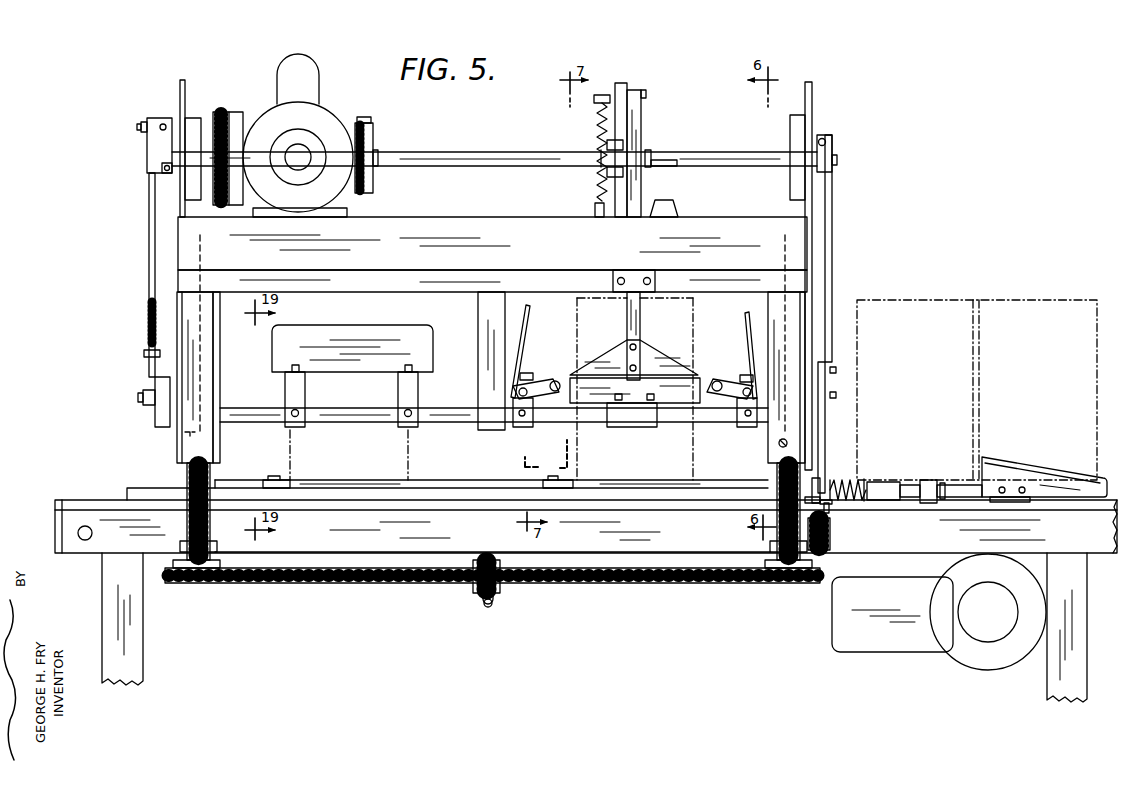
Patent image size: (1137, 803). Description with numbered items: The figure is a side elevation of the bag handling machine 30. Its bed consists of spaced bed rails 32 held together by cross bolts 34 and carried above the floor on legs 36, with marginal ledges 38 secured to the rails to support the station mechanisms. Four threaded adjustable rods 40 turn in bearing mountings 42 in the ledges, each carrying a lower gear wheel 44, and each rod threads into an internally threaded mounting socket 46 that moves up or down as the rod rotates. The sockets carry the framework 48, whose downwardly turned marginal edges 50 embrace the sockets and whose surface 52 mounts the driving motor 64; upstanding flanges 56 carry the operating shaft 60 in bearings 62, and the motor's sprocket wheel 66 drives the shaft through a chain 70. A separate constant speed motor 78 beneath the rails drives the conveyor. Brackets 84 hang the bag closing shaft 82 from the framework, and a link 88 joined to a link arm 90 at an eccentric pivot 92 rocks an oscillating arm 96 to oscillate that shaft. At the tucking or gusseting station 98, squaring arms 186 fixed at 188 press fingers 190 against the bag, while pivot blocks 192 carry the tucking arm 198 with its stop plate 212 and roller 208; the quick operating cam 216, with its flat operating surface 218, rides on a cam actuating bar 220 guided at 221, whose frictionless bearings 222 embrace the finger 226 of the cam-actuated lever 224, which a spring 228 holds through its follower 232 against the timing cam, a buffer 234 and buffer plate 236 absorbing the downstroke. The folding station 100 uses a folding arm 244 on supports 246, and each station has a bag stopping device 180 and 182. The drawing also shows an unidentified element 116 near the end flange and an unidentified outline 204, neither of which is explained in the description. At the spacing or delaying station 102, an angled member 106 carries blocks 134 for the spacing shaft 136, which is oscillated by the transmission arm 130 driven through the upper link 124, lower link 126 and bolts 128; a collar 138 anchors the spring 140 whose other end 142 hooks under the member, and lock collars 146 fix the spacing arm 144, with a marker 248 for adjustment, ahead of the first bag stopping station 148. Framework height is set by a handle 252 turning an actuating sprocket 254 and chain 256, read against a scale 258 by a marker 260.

The bag handling machine 30 is at (386, 594).
The bed rails 32 is at (62, 530).
The cross bolts 34 is at (86, 541).
The legs 36 is at (140, 636).
The marginal ledges 38 is at (464, 553).
The adjustable rods 40 is at (186, 473).
The bearing mountings 42 is at (214, 544).
The sprocket or gear wheel 44 is at (193, 578).
The mounting socket 46 is at (216, 376).
The framework 48 is at (487, 210).
The downwardly turned marginal edges 50 is at (398, 225).
The surface 52 is at (438, 218).
The upstanding flanges 56 is at (185, 80).
The operating shaft 60 is at (440, 152).
The bearings 62 is at (194, 118).
The driving motor 64 is at (325, 124).
The sprocket wheel or gear 66 is at (376, 140).
The sprocket or chain 70 is at (364, 124).
The constant speed motor 78 is at (976, 643).
The bag closing shaft 82 is at (260, 418).
The brackets 84 is at (202, 330).
The link 88 is at (148, 293).
The link arm 90 is at (165, 118).
The pivots 92 is at (138, 127).
The oscillating arm 96 is at (156, 400).
The tucking or gusseting station 98 is at (646, 450).
The folding station 100 is at (343, 462).
The spacing or delaying station 102 is at (1028, 455).
The angled member 106 is at (126, 490).
The bearing bracket 116 is at (832, 146).
The upper link 124 is at (832, 206).
The lower link 126 is at (826, 425).
The bolts 128 is at (836, 395).
The oscillating transmission arm 130 is at (816, 478).
The blocks 134 is at (929, 480).
The delaying or spacing shaft 136 is at (886, 488).
The collar 138 is at (866, 480).
The spring 140 is at (852, 502).
The other end of the spring 142 is at (836, 506).
The delay or spacing arm 144 is at (1074, 480).
The lock collars 146 is at (922, 502).
The first bag stopping station 148 is at (963, 284).
The bag stopping device 180 is at (574, 478).
The bag stopping device 182 is at (278, 478).
The compacting or squaring arms 186 is at (672, 406).
The fixed mounting 188 is at (632, 418).
The fingers 190 is at (700, 406).
The pivot blocks 192 is at (518, 428).
The tucking or gusseting arm 198 is at (556, 330).
The phantom outline 204 is at (600, 297).
The bearing or roller 208 is at (558, 382).
The stop plate 212 is at (526, 382).
The quick operating cam 216 is at (672, 348).
The operating surface 218 is at (594, 410).
The cam actuating bar 220 is at (648, 302).
The guide 221 is at (648, 276).
The frictionless bearings 222 is at (607, 145).
The cam-actuated lever 224 is at (621, 83).
The finger 226 is at (596, 162).
The spring 228 is at (596, 123).
The frictionless follower 232 is at (641, 92).
The buffer 234 is at (672, 208).
The buffer plate 236 is at (670, 167).
The folding arm 244 is at (356, 373).
The supports 246 is at (286, 402).
The marker 248 is at (390, 330).
The handle 252 is at (493, 604).
The actuating sprocket 254 is at (474, 588).
The chain 256 is at (644, 583).
The scale 258 is at (834, 558).
The marker 260 is at (778, 458).